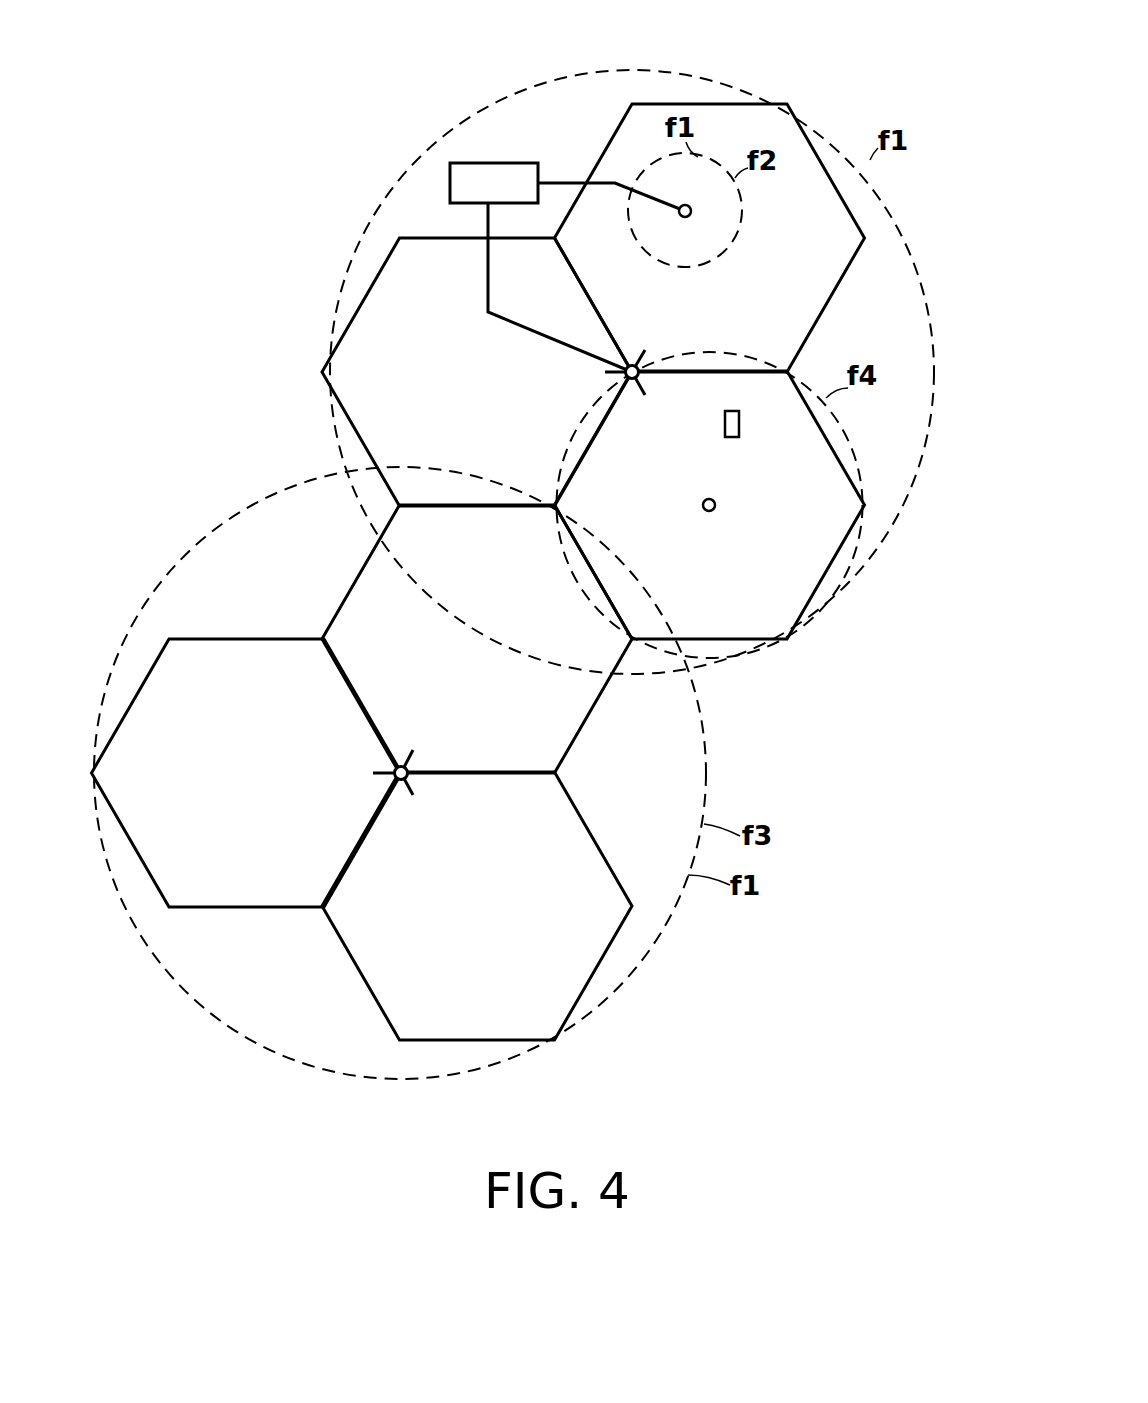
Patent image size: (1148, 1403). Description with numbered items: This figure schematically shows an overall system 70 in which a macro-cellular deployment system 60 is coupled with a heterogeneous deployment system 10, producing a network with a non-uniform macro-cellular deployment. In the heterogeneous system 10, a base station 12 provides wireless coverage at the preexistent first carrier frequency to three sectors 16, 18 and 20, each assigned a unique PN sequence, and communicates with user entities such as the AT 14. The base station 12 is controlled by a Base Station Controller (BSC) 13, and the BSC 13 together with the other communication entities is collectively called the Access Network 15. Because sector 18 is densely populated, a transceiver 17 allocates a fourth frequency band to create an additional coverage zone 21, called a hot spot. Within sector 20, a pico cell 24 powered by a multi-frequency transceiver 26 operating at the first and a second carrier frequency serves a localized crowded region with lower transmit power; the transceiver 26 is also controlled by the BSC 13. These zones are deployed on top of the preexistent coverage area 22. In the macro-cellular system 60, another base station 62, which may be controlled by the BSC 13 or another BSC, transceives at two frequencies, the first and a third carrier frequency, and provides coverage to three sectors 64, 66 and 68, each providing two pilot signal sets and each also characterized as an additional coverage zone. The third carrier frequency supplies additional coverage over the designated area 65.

The multi-carrier communication system 10 is at (390, 100).
The overall system 70 is at (242, 158).
The Access Network (AN) 15 is at (208, 325).
The macro-cellular deployment system 60 is at (190, 514).
The Base Station Controller (BSC) 13 is at (511, 162).
The base station 12 is at (632, 381).
The AT (access terminal) 14 is at (739, 418).
The sector 16 is at (477, 372).
The transceiver 17 is at (702, 508).
The sector 18 is at (710, 505).
The sector 20 is at (710, 238).
The coverage zone (hot spot) 21 is at (842, 448).
The coverage area 22 is at (820, 133).
The pico cell 24 is at (632, 236).
The transceiver 26 is at (700, 190).
The base station 62 is at (406, 780).
The sector 64 is at (477, 906).
The designated area of coverage 65 is at (652, 946).
The sector 66 is at (477, 639).
The sector 68 is at (247, 773).